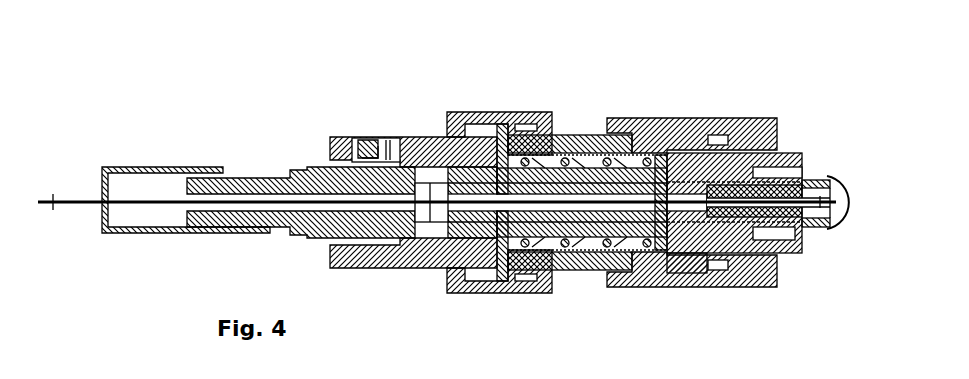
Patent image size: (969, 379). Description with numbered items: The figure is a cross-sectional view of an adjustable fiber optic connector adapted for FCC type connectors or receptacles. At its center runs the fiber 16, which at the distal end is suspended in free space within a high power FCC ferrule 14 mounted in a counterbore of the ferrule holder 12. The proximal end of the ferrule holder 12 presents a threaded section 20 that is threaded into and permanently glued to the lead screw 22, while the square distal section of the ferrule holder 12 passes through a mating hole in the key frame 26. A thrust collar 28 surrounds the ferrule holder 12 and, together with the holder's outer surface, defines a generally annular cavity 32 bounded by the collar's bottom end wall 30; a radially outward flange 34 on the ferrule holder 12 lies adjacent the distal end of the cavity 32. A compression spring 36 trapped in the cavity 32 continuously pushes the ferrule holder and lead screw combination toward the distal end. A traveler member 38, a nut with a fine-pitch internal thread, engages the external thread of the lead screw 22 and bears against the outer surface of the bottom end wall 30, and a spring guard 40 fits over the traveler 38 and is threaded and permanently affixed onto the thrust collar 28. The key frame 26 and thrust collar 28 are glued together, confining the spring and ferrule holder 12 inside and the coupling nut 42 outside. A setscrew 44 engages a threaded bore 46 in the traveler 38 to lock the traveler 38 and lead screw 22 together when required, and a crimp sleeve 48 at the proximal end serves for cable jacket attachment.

The ferrule holder 12 is at (635, 138).
The FCC ferrule 14 is at (838, 230).
The fiber 16 is at (80, 205).
The threaded section 20 is at (478, 222).
The lead screw 22 is at (297, 238).
The key frame 26 is at (790, 255).
The thrust collar 28 is at (573, 133).
The bottom end wall 30 is at (495, 285).
The annular cavity 32 is at (603, 244).
The flange 34 is at (680, 276).
The compression spring 36 is at (643, 257).
The traveler member 38 is at (400, 268).
The spring guard 40 is at (488, 112).
The coupling nut 42 is at (700, 118).
The setscrew 44 is at (372, 143).
The threaded bore 46 is at (388, 150).
The crimp sleeve 48 is at (163, 167).